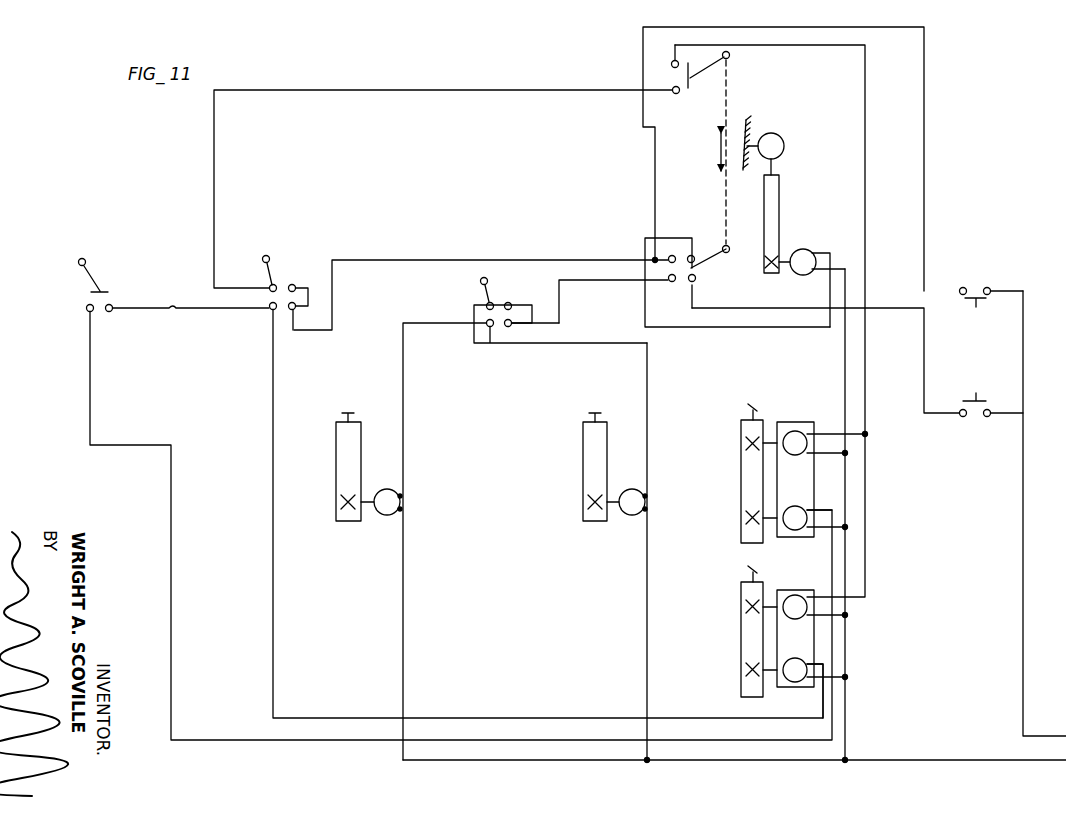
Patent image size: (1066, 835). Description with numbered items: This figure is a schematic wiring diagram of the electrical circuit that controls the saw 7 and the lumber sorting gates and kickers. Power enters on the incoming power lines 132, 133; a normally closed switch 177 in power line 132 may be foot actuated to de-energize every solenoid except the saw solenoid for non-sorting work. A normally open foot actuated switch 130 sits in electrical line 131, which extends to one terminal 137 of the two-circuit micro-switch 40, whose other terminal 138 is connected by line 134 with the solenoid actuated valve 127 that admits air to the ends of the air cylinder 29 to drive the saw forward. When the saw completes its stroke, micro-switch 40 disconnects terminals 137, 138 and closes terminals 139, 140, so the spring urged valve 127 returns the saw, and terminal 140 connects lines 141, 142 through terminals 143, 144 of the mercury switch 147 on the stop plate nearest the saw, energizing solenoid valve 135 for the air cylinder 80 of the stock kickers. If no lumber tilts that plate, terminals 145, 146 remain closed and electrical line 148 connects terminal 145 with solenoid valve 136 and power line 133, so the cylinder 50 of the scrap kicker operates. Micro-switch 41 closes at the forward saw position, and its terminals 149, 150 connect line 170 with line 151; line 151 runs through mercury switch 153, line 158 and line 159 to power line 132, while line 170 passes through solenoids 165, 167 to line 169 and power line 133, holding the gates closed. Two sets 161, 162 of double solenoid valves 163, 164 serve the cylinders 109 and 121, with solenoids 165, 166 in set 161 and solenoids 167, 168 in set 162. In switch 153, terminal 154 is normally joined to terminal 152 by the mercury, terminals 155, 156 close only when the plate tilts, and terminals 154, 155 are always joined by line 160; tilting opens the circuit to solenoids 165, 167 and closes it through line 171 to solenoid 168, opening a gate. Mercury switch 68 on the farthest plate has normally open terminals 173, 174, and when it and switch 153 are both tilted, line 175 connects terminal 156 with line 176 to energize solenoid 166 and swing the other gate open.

The saw 7 is at (746, 121).
The air cylinder 29 is at (780, 182).
The micro-switch 40 is at (688, 286).
The micro-switch 41 is at (671, 75).
The cylinder 50 is at (583, 442).
The mercury switch 68 is at (80, 296).
The air cylinder 80 is at (361, 442).
The cylinder 109 is at (742, 505).
The air cylinder 121 is at (742, 665).
The solenoid actuated valve 127 is at (803, 247).
The foot actuated switch 130 is at (976, 420).
The electrical line 131 is at (924, 333).
The power line 132 is at (1023, 613).
The power line 133 is at (912, 760).
The line 134 is at (731, 328).
The solenoid valve 135 is at (384, 520).
The solenoid valve 136 is at (629, 520).
The terminal 137 is at (697, 277).
The terminal 138 is at (692, 255).
The terminal 139 is at (672, 255).
The terminal 140 is at (672, 282).
The electrical line 141 is at (612, 281).
The electrical line 142 is at (403, 606).
The terminal 143 is at (508, 340).
The terminal 144 is at (490, 340).
The terminal 145 is at (486, 303).
The terminal 146 is at (508, 302).
The mercury switch 147 is at (480, 316).
The electrical line 148 is at (647, 375).
The terminal 149 is at (671, 62).
The terminal 150 is at (680, 94).
The line 151 is at (418, 90).
The terminal 152 is at (270, 285).
The mercury switch 153 is at (262, 297).
The terminal 154 is at (292, 284).
The terminal 155 is at (291, 311).
The terminal 156 is at (270, 310).
The line 158 is at (405, 258).
The line 159 is at (655, 158).
The line 160 is at (308, 290).
The set of double solenoid valves 161 is at (785, 418).
The set of double solenoid valves 162 is at (785, 692).
The double solenoid valve 163 is at (737, 480).
The double solenoid valve 164 is at (737, 640).
The solenoid 165 is at (797, 438).
The solenoid 166 is at (795, 526).
The solenoid 167 is at (796, 603).
The solenoid 168 is at (797, 666).
The line 169 is at (845, 353).
The line 170 is at (865, 131).
The line 171 is at (273, 618).
The terminal 173 is at (112, 304).
The terminal 174 is at (86, 310).
The line 175 is at (172, 310).
The line 176 is at (90, 394).
The switch 177 is at (970, 288).